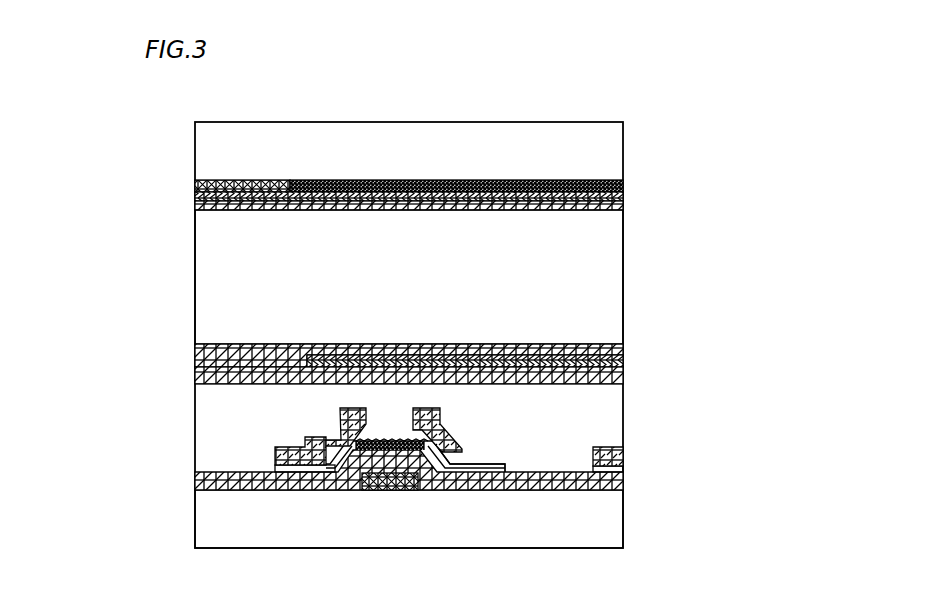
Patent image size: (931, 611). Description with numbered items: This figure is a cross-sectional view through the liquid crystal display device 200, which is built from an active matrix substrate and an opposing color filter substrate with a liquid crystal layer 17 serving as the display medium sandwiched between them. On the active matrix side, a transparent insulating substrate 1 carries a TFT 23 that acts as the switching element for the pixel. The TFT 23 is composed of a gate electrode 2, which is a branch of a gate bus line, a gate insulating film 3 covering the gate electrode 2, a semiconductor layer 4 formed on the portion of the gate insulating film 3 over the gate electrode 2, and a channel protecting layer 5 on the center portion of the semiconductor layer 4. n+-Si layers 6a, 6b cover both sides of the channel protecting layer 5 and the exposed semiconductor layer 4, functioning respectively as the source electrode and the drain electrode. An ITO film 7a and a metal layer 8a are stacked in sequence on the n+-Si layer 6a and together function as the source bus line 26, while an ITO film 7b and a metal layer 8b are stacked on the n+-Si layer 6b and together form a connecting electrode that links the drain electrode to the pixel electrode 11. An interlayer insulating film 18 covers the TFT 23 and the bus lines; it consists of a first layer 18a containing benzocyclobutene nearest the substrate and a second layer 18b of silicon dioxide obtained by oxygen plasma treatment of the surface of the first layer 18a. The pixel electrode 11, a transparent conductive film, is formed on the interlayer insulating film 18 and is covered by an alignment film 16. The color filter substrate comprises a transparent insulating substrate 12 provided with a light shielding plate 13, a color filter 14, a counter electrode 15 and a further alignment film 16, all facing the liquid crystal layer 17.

The liquid crystal display device 200 is at (668, 90).
The transparent insulating substrate 1 is at (592, 530).
The gate electrode 2 is at (392, 485).
The gate insulating film 3 is at (240, 490).
The semiconductor layer 4 is at (351, 465).
The channel protecting layer 5 is at (378, 402).
The n+-Si layer 6a is at (335, 440).
The n+-Si layer 6b is at (440, 470).
The ITO film 7a is at (275, 468).
The ITO film 7b is at (492, 473).
The metal layer 8a is at (275, 452).
The metal layer 8b is at (462, 450).
The pixel electrode 11 is at (623, 361).
The transparent insulating substrate 12 is at (520, 140).
The light shielding plate 13 is at (272, 180).
The color filter 14 is at (390, 182).
The counter electrode 15 is at (623, 191).
The alignment film 16 is at (600, 345).
The liquid crystal layer 17 is at (215, 258).
The interlayer insulating film 18 is at (735, 380).
The first layer 18a is at (623, 452).
The second layer 18b is at (623, 378).
The TFT 23 is at (392, 408).
The source bus line 26 is at (142, 447).